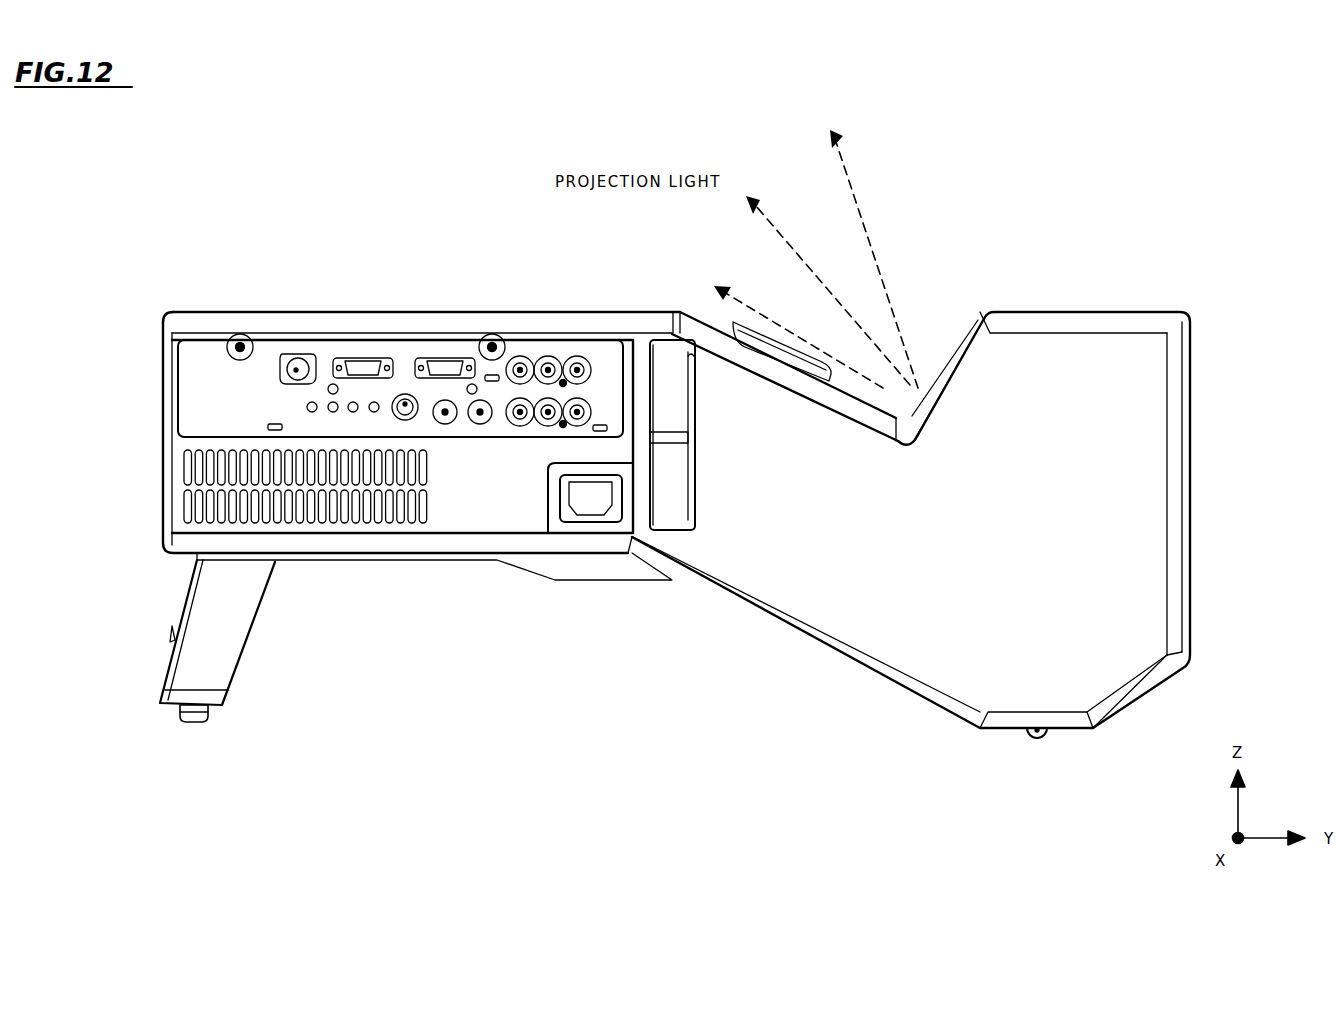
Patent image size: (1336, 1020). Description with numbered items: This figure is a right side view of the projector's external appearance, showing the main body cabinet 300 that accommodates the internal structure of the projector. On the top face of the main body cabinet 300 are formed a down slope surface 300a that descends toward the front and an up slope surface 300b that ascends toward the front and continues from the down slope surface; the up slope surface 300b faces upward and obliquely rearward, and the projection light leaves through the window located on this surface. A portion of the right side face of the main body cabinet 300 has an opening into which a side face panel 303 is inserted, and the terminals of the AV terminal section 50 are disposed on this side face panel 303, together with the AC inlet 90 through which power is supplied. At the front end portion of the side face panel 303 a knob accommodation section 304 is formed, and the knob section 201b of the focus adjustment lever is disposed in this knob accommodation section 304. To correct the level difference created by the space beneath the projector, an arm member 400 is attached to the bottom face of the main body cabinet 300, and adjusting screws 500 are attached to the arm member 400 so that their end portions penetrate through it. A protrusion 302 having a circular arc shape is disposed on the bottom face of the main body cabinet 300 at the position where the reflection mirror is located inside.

The main body cabinet 300 is at (218, 305).
The down slope surface 300a is at (703, 318).
The up slope surface 300b is at (960, 342).
The AV terminal section 50 is at (407, 357).
The knob section 201b is at (680, 452).
The knob accommodation section 304 is at (667, 480).
The side face panel 303 is at (453, 510).
The AC inlet 90 is at (582, 512).
The arm member 400 is at (193, 632).
The adjusting screws 500 is at (192, 733).
The protrusion 302 is at (1038, 748).